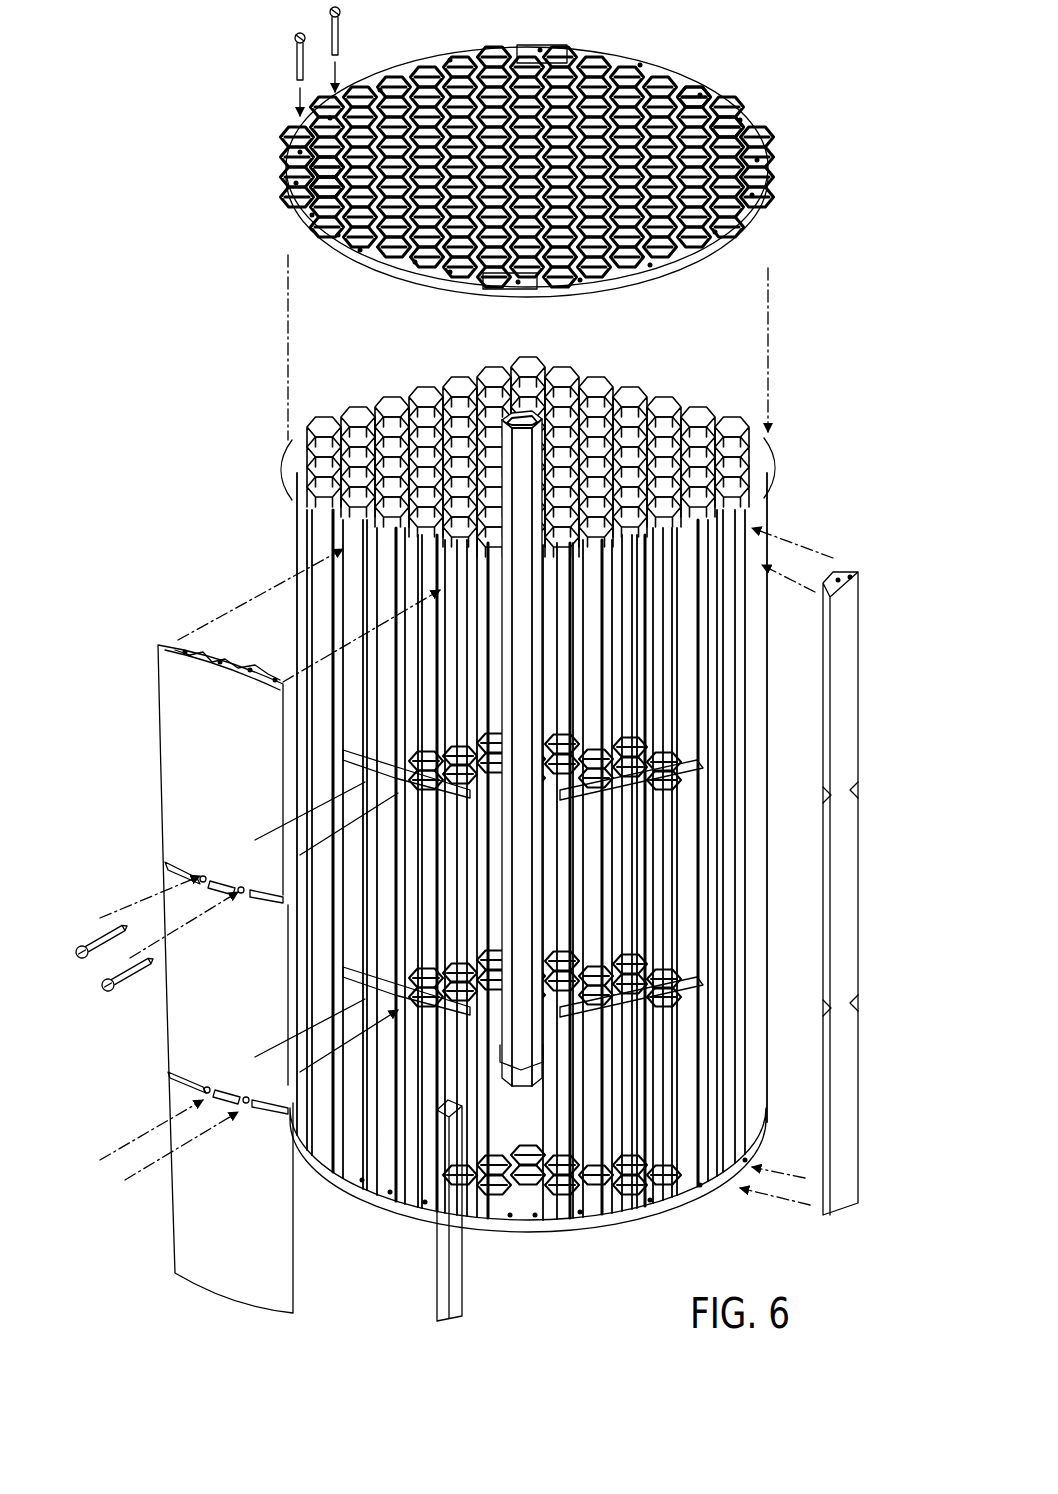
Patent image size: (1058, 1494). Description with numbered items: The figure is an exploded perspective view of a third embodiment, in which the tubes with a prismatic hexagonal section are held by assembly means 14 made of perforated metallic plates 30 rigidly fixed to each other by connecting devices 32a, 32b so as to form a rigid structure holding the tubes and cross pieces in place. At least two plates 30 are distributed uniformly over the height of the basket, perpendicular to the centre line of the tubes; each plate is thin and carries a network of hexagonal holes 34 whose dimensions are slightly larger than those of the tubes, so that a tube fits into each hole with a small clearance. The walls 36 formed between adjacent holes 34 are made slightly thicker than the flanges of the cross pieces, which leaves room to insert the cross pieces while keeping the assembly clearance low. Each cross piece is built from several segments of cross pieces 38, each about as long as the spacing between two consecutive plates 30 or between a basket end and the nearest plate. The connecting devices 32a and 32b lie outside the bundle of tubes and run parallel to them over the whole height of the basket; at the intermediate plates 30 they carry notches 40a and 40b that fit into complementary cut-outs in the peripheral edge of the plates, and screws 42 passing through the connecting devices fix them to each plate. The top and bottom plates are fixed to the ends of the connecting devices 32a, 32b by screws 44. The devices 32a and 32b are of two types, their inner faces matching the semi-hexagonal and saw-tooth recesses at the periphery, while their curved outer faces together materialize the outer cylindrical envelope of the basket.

The assembly means 14 is at (300, 237).
The perforated metallic plate 30 is at (340, 770).
The connecting device 32a is at (856, 576).
The connecting device 32b is at (215, 990).
The holes 34 is at (766, 203).
The walls 36 is at (725, 136).
The segment of cross piece 38 is at (440, 1262).
The notch 40a is at (860, 797).
The notch 40b is at (163, 866).
The screws 42 is at (112, 978).
The screws 44 is at (332, 12).